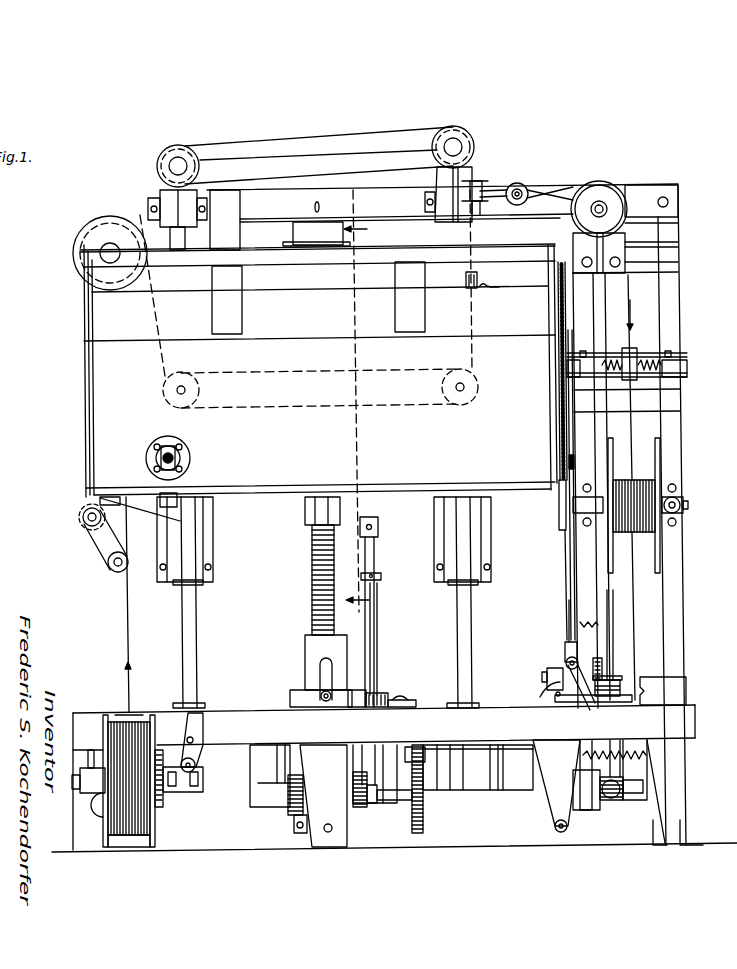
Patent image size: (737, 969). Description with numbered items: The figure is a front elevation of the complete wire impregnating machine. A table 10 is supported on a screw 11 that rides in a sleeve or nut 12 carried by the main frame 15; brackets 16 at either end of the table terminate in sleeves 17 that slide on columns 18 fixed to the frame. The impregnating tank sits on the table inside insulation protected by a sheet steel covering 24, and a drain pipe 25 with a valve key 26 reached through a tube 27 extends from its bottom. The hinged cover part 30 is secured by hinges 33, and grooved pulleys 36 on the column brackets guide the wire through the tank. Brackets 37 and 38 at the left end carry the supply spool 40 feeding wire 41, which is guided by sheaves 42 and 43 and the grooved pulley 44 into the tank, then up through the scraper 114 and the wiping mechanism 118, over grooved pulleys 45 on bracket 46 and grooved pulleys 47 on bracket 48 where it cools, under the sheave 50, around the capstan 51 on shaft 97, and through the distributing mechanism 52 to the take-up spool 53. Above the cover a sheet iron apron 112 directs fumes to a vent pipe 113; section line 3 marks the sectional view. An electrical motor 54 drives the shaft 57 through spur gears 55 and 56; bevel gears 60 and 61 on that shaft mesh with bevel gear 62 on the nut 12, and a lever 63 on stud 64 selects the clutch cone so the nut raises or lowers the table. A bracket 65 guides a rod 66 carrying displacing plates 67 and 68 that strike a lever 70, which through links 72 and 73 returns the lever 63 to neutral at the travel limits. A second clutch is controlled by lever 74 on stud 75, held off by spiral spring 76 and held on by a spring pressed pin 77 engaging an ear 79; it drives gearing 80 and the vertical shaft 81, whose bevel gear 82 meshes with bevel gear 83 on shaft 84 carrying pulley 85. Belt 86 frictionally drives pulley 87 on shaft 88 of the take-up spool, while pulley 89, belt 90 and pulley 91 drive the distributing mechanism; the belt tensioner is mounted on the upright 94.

The section line 3 is at (356, 407).
The table 10 is at (400, 508).
The screw 11 is at (312, 555).
The sleeve or nut 12 is at (305, 647).
The main frame 15 is at (430, 705).
The brackets 16 is at (178, 584).
The sleeves 17 is at (213, 545).
The columns 18 is at (197, 608).
The sheet steel covering 24 is at (108, 402).
The drain pipe 25 is at (163, 510).
The operating key 26 is at (156, 458).
The tube 27 is at (181, 448).
The hinged cover part 30 is at (106, 310).
The hinges 33 is at (243, 305).
The grooved pulleys 36 is at (165, 400).
The bracket 37 is at (205, 770).
The bracket 38 is at (85, 780).
The supply spool 40 is at (105, 740).
The wire 41 is at (330, 142).
The sheave 42 is at (110, 570).
The sheave 43 is at (82, 525).
The grooved pulley 44 is at (97, 240).
The grooved pulleys 45 is at (468, 138).
The bracket 46 is at (466, 178).
The grooved pulleys 47 is at (190, 148).
The bracket 48 is at (160, 185).
The sheave 50 is at (525, 185).
The capstan 51 is at (615, 188).
The distributing mechanism 52 is at (637, 355).
The take-up spool 53 is at (658, 478).
The electrical motor 54 is at (480, 738).
The spur gear 55 is at (418, 750).
The spur gear 56 is at (424, 822).
The shaft 57 is at (492, 795).
The bevel gear 60 is at (362, 812).
The bevel gear 61 is at (288, 810).
The bevel gear 62 is at (356, 770).
The lever 63 is at (320, 675).
The stud 64 is at (328, 822).
The bracket 65 is at (400, 698).
The rod 66 is at (378, 633).
The displacing plate 67 is at (382, 574).
The displacing plate 68 is at (382, 690).
The lever 70 is at (356, 690).
The link 72 is at (290, 765).
The link 73 is at (298, 835).
The lever 74 is at (587, 702).
The stud 75 is at (568, 826).
The spiral spring 76 is at (647, 736).
The spring pressed pin 77 is at (565, 668).
The protruding ear 79 is at (557, 695).
The gearing 80 is at (614, 802).
The vertical shaft 81 is at (608, 633).
The bevel gear 82 is at (617, 680).
The bevel gear 83 is at (596, 658).
The shaft 84 is at (552, 672).
The pulley 85 is at (568, 645).
The belt 86 is at (567, 575).
The pulley 87 is at (567, 463).
The shaft 88 is at (688, 513).
The pulley 89 is at (559, 504).
The belt 90 is at (566, 423).
The pulley 91 is at (557, 354).
The upright 94 is at (677, 605).
The shaft 97 is at (597, 209).
The sheet iron apron 112 is at (318, 262).
The vent pipe 113 is at (293, 232).
The scraper 114 is at (480, 272).
The wiping mechanism 118 is at (482, 180).